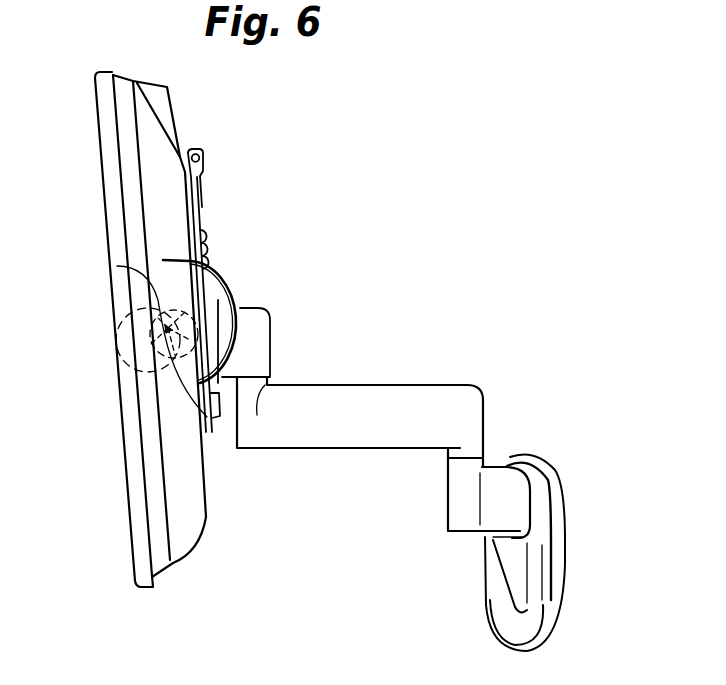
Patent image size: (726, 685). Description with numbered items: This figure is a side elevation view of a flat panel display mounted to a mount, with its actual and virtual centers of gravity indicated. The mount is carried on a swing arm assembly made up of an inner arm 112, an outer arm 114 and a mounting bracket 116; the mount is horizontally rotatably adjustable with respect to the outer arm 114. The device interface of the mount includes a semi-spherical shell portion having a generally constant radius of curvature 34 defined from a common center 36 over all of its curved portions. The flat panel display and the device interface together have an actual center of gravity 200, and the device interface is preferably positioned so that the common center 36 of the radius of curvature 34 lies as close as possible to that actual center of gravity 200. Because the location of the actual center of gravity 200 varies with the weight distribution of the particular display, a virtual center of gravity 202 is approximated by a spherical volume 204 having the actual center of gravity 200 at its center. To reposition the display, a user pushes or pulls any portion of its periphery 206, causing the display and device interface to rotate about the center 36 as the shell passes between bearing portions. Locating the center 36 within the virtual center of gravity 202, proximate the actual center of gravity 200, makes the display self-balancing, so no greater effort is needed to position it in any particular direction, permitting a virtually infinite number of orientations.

The periphery 206 is at (145, 84).
The radius of curvature 34 is at (233, 283).
The common center 36 is at (117, 266).
The actual center of gravity 200 is at (125, 345).
The virtual center of gravity 202 is at (147, 372).
The spherical volume 204 is at (175, 387).
The outer arm 114 is at (325, 385).
The inner arm 112 is at (490, 465).
The mounting bracket 116 is at (565, 520).